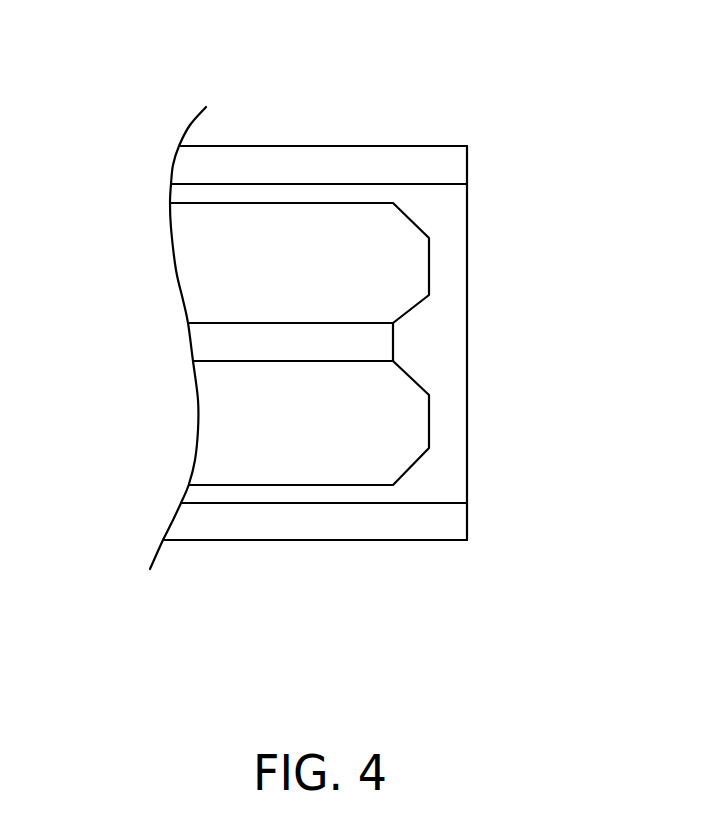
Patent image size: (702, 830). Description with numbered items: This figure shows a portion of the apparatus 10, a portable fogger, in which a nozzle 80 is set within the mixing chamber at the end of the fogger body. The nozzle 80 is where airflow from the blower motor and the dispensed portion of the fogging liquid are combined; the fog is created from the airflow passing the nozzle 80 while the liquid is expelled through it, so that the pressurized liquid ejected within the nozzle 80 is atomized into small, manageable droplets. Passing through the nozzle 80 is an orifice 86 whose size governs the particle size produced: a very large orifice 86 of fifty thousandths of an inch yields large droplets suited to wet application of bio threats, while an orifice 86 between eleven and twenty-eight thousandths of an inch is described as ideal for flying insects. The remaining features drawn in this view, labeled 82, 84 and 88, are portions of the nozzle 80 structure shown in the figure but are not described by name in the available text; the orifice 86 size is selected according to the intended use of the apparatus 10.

The apparatus 10 is at (407, 288).
The nozzle 80 is at (205, 241).
The top wall 82 is at (317, 165).
The lower slot 84 is at (225, 351).
The orifice 86 is at (393, 341).
The angled surface 88 is at (417, 381).